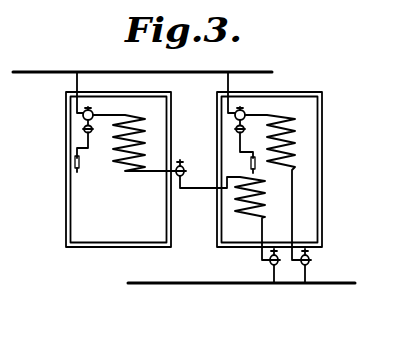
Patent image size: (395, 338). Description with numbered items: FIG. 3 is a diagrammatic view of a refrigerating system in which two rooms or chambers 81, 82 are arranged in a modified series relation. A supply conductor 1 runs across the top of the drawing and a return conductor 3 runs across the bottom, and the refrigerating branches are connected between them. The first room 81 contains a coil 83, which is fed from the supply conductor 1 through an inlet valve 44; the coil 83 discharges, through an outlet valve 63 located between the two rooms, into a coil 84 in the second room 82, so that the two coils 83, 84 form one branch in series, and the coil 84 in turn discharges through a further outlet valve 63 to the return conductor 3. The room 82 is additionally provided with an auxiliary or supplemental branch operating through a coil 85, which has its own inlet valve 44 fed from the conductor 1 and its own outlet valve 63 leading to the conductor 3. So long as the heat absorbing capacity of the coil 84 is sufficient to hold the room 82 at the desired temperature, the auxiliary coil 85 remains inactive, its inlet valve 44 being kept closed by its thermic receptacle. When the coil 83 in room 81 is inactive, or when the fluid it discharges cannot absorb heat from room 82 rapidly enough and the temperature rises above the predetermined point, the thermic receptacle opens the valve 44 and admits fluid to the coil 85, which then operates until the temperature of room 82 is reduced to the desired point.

The supply pipe 1 is at (102, 72).
The return pipe 3 is at (220, 284).
The inlet valve 44 is at (83, 115).
The outlet valve 63 is at (197, 159).
The room 81 is at (80, 200).
The room 82 is at (305, 199).
The coil 83 is at (125, 173).
The coil 84 is at (237, 210).
The auxiliary coil 85 is at (291, 147).